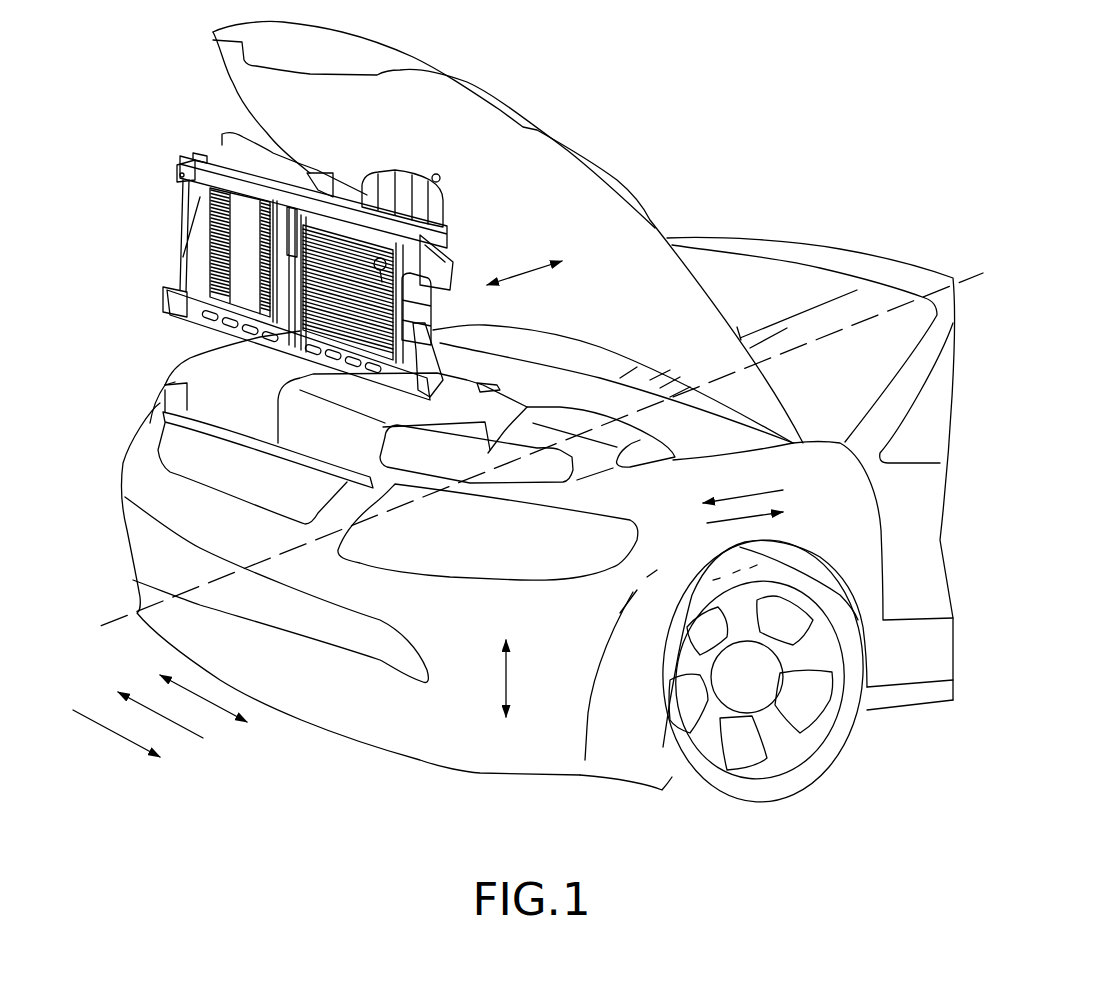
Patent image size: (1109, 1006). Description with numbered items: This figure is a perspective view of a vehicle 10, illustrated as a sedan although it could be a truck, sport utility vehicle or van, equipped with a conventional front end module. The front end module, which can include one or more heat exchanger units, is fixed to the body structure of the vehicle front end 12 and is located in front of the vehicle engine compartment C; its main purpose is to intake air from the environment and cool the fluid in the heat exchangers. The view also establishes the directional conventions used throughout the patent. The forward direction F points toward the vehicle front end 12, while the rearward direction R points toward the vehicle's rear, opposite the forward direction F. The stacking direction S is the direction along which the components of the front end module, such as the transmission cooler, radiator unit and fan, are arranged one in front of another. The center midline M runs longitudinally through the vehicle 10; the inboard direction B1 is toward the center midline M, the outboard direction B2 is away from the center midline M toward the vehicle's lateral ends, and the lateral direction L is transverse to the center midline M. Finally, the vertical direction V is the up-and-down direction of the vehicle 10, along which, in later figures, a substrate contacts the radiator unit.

The vehicle 10 is at (795, 97).
The vehicle front end 12 is at (113, 455).
The vehicle engine compartment C is at (240, 372).
The stacking direction S is at (520, 268).
The forward direction F is at (755, 490).
The rearward direction R is at (732, 523).
The center midline M is at (140, 588).
The vertical direction V is at (507, 680).
The lateral direction L is at (210, 707).
The inboard direction B1 is at (181, 731).
The outboard direction B2 is at (110, 732).